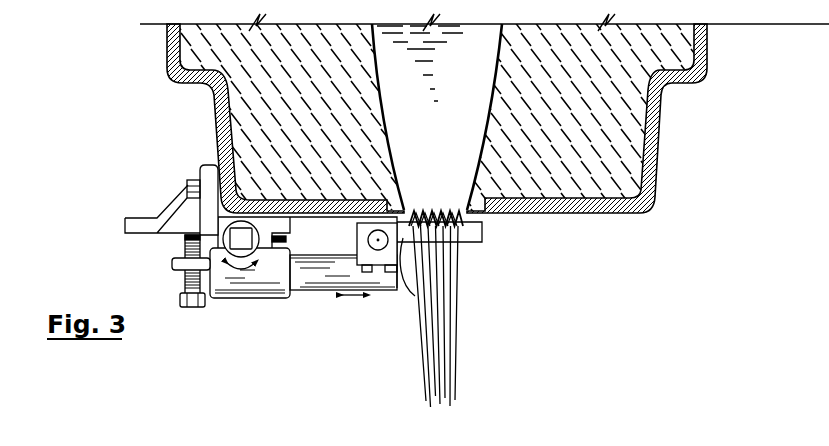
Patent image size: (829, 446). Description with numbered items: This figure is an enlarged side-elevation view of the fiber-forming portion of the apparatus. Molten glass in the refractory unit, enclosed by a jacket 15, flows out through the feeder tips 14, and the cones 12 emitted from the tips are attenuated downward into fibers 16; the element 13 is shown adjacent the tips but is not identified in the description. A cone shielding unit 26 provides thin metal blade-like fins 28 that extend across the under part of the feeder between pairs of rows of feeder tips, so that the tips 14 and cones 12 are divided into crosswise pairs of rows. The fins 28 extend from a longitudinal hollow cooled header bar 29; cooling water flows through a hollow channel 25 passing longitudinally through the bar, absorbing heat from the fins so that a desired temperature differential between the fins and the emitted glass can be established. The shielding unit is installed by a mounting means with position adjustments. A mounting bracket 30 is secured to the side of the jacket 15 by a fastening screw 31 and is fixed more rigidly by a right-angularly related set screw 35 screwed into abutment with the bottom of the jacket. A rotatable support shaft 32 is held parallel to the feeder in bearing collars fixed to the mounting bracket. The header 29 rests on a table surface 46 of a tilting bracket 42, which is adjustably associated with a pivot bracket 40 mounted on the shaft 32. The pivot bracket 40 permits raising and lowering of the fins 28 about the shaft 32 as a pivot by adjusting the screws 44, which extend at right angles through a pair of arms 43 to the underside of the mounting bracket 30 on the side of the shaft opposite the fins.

The cones 12 is at (414, 298).
The bushing tips 13 is at (482, 239).
The feeder tips 14 is at (482, 219).
The jacket 15 is at (640, 207).
The fibers 16 is at (432, 356).
The hollow channel 25 is at (366, 233).
The cone shielding unit 26 is at (248, 310).
The blade-like fins 28 is at (470, 245).
The header bar 29 is at (357, 251).
The mounting bracket 30 is at (143, 215).
The fastening screw 31 is at (188, 188).
The support shaft 32 is at (185, 242).
The set screw 35 is at (286, 239).
The pivot bracket 40 is at (265, 299).
The tilting bracket 42 is at (308, 293).
The arms 43 is at (172, 270).
The screws 44 is at (193, 307).
The table surface 46 is at (383, 266).